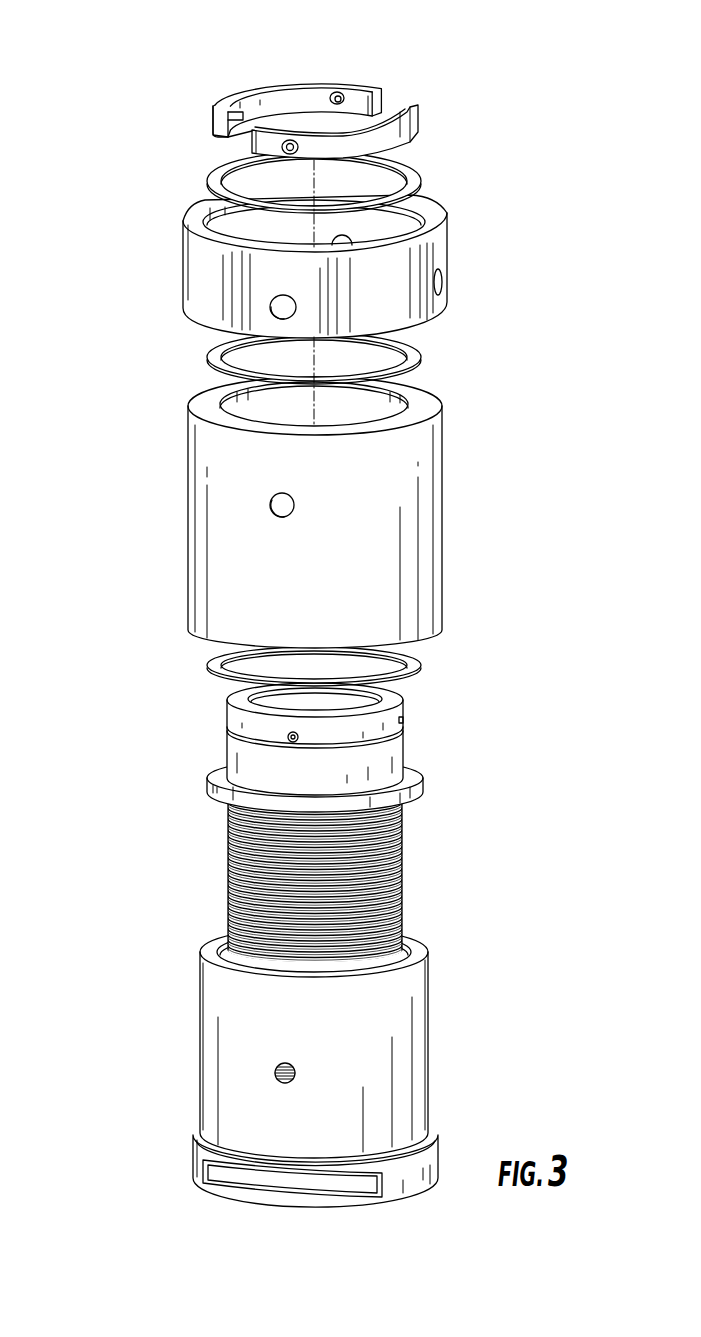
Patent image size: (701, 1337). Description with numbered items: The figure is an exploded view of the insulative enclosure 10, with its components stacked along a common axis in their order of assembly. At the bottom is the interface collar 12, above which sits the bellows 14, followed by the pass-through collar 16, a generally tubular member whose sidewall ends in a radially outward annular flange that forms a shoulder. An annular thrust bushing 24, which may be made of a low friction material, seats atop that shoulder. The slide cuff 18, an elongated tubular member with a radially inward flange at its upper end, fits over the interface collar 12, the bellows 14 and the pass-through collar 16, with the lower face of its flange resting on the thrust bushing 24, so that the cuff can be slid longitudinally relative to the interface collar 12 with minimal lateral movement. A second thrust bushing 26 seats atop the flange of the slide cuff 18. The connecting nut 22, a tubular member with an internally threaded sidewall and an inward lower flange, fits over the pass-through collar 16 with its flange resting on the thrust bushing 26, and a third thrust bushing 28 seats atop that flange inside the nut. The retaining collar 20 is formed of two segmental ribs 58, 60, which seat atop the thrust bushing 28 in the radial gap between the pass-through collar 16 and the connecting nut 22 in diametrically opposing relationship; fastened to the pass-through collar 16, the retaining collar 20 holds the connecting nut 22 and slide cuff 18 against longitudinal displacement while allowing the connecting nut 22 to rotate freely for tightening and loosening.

The enclosure 10 is at (272, 608).
The interface collar 12 is at (406, 1050).
The bellows 14 is at (383, 888).
The pass-through collar 16 is at (380, 760).
The slide cuff 18 is at (426, 513).
The retaining collar 20 is at (358, 83).
The connecting nut 22 is at (441, 257).
The thrust bushing 24 is at (419, 652).
The thrust bushing 26 is at (422, 356).
The thrust bushing 28 is at (416, 175).
The segmental rib 58 is at (405, 132).
The segmental rib 60 is at (287, 95).